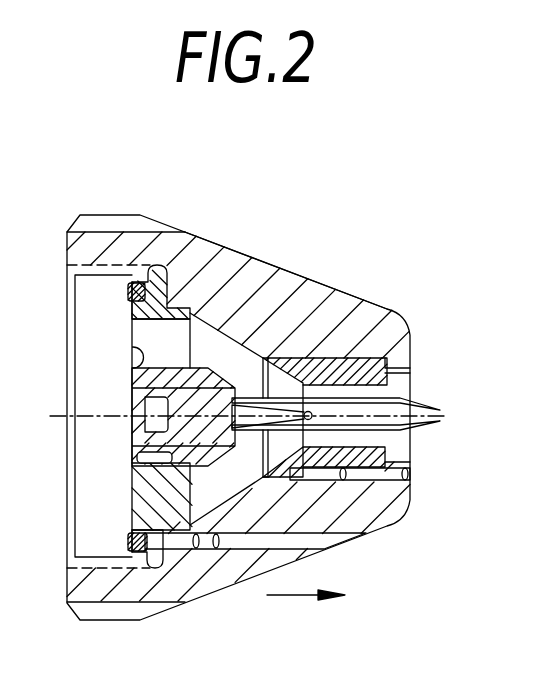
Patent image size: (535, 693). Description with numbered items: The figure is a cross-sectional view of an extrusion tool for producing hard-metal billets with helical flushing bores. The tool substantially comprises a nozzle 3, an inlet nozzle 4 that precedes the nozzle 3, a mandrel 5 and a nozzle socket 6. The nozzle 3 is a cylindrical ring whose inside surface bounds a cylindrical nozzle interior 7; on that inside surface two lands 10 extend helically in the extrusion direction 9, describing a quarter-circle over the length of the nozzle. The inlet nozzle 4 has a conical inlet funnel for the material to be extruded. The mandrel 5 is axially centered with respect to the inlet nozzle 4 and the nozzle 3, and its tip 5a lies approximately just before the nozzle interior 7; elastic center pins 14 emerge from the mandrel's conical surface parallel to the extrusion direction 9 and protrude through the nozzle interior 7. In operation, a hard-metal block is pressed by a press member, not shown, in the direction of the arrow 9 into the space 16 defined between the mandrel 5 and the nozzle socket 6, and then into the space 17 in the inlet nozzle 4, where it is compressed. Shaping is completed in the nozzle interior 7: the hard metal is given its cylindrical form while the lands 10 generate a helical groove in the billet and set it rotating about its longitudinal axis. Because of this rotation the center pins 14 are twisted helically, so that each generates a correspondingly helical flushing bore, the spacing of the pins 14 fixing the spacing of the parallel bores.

The nozzle 3 is at (373, 353).
The inlet nozzle 4 is at (292, 352).
The mandrel 5 is at (220, 373).
The mandrel tip 5a is at (238, 440).
The nozzle socket 6 is at (357, 313).
The nozzle interior 7 is at (374, 392).
The extrusion direction 9 is at (293, 595).
The lands 10 is at (285, 411).
The center pins 14 is at (436, 414).
The space 16 is at (207, 343).
The space 17 is at (292, 478).